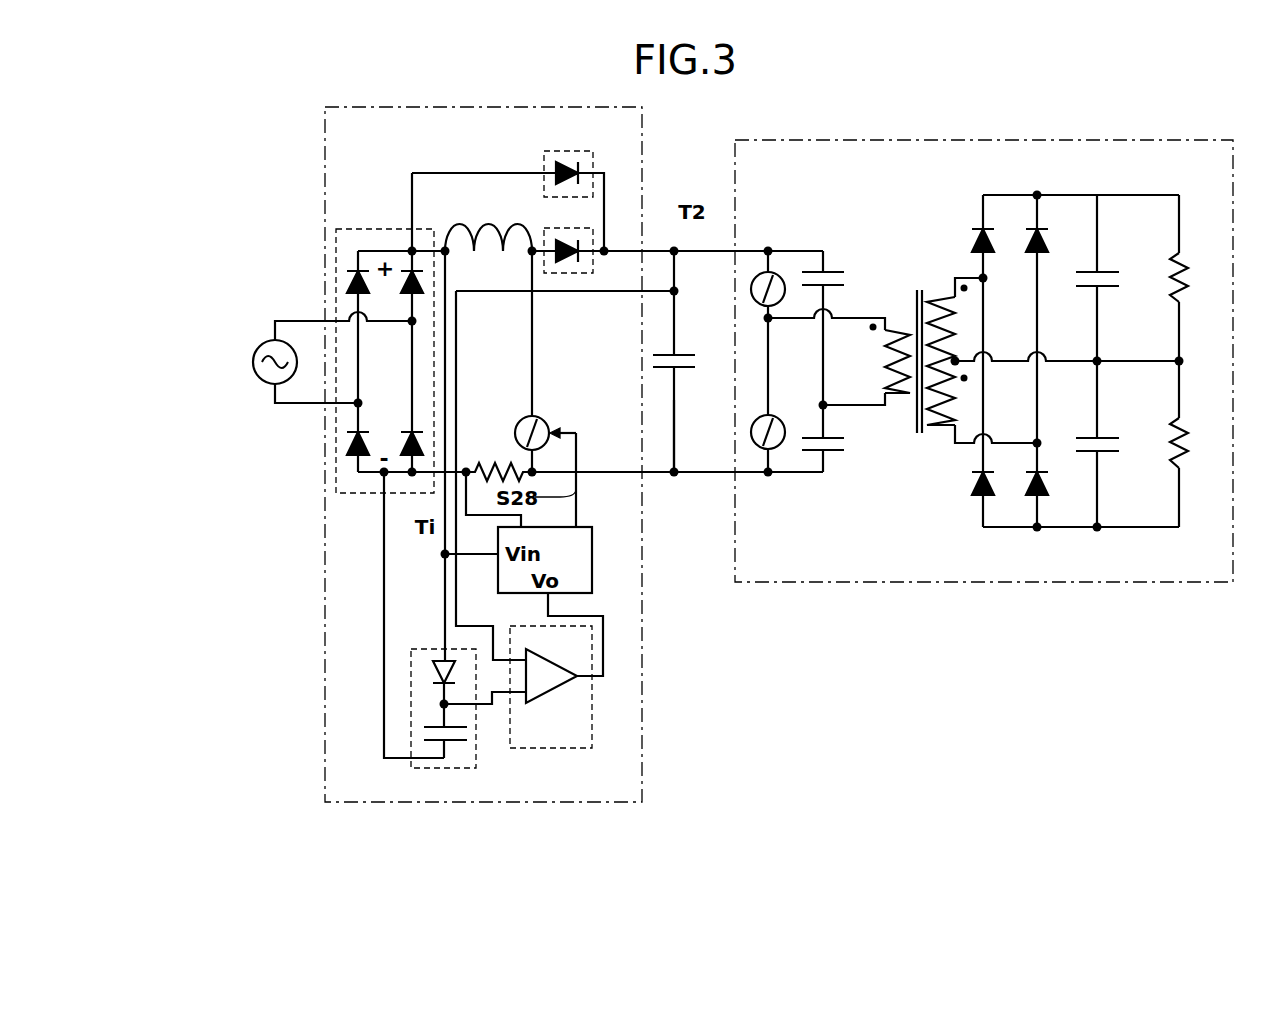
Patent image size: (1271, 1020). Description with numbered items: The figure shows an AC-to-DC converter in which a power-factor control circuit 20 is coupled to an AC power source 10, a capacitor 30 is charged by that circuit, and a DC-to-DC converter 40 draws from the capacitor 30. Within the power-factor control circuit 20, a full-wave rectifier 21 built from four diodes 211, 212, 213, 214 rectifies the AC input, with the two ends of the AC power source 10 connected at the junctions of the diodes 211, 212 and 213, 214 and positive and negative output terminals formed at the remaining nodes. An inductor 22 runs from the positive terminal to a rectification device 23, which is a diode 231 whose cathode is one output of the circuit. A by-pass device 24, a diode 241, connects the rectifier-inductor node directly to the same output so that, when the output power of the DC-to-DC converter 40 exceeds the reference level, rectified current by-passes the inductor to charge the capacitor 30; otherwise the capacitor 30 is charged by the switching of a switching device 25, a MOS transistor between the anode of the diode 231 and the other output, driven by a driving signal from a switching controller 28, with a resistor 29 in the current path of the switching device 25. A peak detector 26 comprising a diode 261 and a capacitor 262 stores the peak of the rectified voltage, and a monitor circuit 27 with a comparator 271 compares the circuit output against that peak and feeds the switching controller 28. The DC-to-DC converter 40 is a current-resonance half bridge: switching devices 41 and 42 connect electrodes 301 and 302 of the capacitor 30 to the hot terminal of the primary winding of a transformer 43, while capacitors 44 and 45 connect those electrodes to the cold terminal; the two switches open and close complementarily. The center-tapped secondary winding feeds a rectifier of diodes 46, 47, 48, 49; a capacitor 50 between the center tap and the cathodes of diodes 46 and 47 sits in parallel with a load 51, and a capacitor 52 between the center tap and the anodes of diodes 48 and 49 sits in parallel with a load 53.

The AC power source 10 is at (253, 352).
The power-factor control circuit 20 is at (645, 150).
The full-wave rectifier 21 is at (360, 228).
The diode 211 is at (350, 282).
The diode 212 is at (348, 452).
The diode 213 is at (425, 282).
The diode 214 is at (423, 432).
The inductor 22 is at (485, 230).
The rectification device 23 is at (594, 265).
The diode 231 is at (566, 263).
The by-pass device 24 is at (592, 165).
The diode 241 is at (548, 165).
The switching device 25 is at (545, 418).
The peak detector 26 is at (411, 662).
The diode 261 is at (433, 672).
The capacitor 262 is at (424, 740).
The monitor circuit 27 is at (548, 748).
The comparator 271 is at (556, 670).
The switching controller 28 is at (578, 527).
The resistor 29 is at (494, 464).
The capacitor 30 is at (680, 355).
The electrode 301 is at (680, 302).
The electrode 302 is at (676, 430).
The DC-to-DC converter 40 is at (1150, 140).
The switching device 41 is at (766, 318).
The switching device 42 is at (776, 418).
The transformer 43 is at (905, 279).
The capacitor 44 is at (828, 272).
The capacitor 45 is at (828, 452).
The diode 46 is at (975, 242).
The diode 47 is at (1046, 242).
The diode 48 is at (978, 497).
The diode 49 is at (1042, 497).
The capacitor 50 is at (1100, 272).
The load 51 is at (1186, 264).
The capacitor 52 is at (1100, 438).
The load 53 is at (1186, 430).